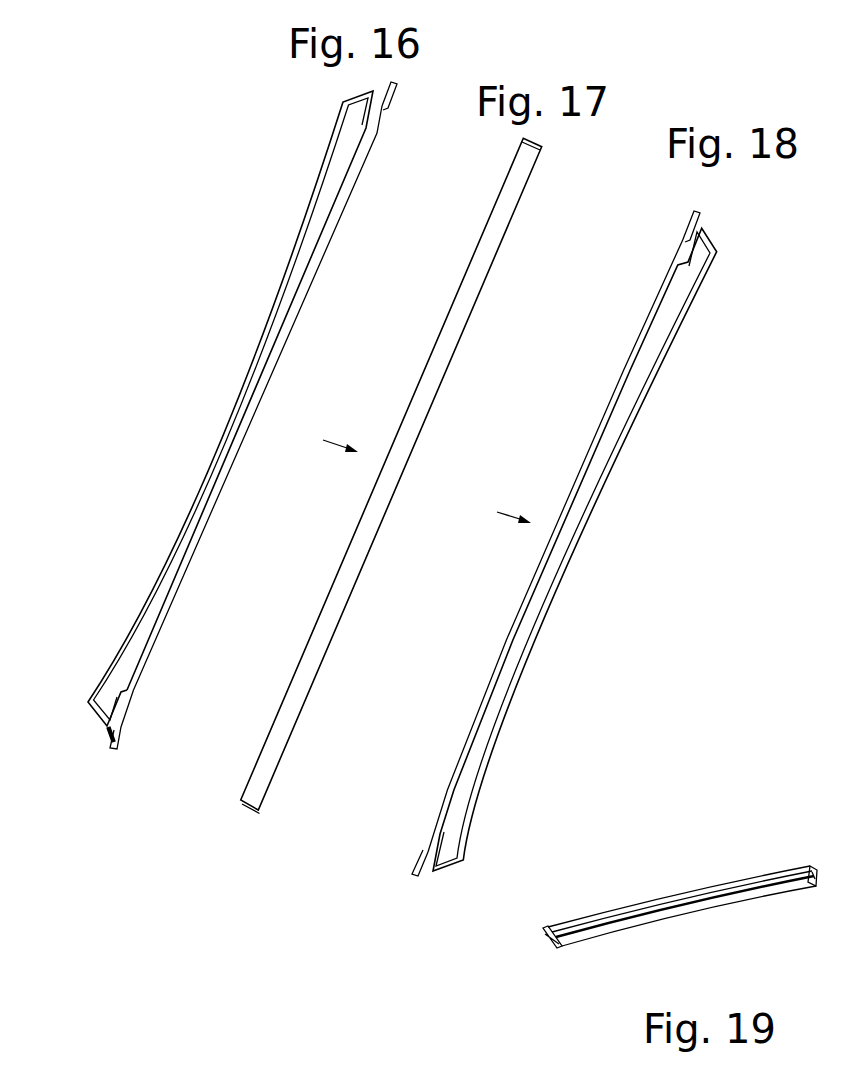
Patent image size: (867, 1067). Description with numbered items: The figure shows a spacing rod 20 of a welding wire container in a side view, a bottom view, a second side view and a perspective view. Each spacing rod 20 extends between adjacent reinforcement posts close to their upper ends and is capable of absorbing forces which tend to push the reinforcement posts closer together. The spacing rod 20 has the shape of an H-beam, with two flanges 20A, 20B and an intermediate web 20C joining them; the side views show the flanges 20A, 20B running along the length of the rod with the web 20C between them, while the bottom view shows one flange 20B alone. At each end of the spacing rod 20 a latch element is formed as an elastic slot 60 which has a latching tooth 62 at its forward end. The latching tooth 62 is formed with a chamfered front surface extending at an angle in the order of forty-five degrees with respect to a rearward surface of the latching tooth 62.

In FIG. 16, the spacing rod 20 is at (231, 454).
In FIG. 17, the spacing rod 20 is at (391, 475).
In FIG. 18, the spacing rod 20 is at (590, 570).
In FIG. 19, the spacing rod 20 is at (722, 902).
In FIG. 16, the flange 20A is at (230, 408).
In FIG. 18, the flange 20A is at (568, 549).
In FIG. 16, the flange 20B is at (231, 454).
In FIG. 17, the flange 20B is at (308, 668).
In FIG. 18, the flange 20B is at (590, 570).
In FIG. 16, the intermediate web 20C is at (172, 585).
In FIG. 18, the intermediate web 20C is at (510, 660).
In FIG. 16, the elastic slot 60 is at (108, 752).
In FIG. 18, the elastic slot 60 is at (428, 878).
In FIG. 16, the latching tooth 62 is at (122, 745).
In FIG. 18, the latching tooth 62 is at (697, 215).